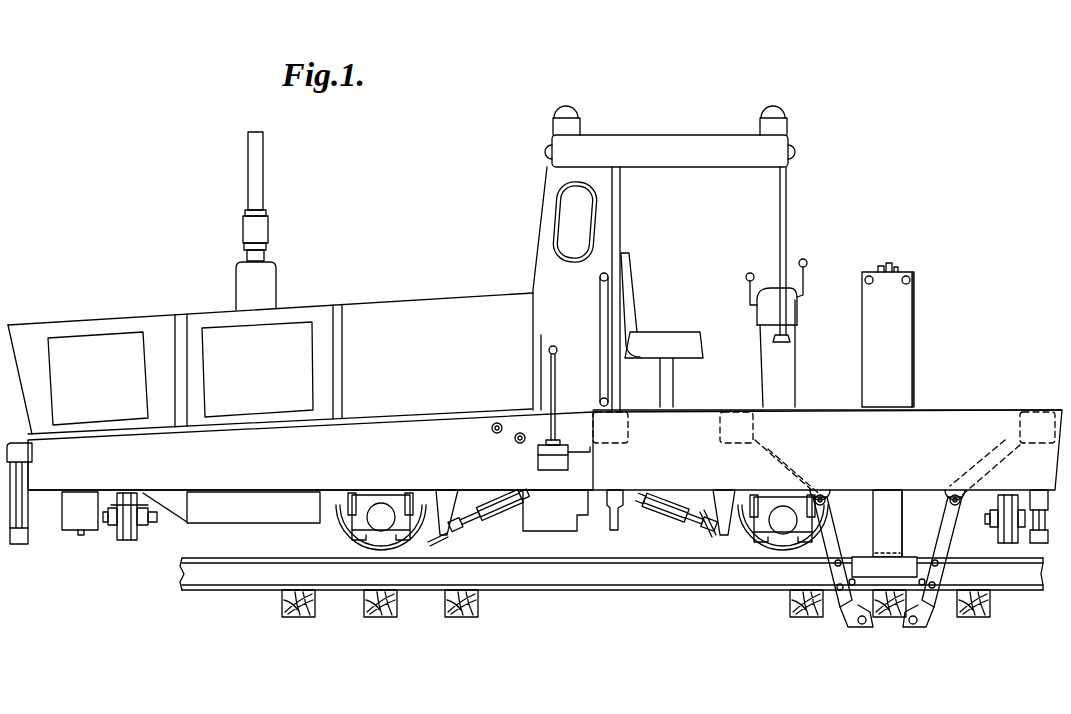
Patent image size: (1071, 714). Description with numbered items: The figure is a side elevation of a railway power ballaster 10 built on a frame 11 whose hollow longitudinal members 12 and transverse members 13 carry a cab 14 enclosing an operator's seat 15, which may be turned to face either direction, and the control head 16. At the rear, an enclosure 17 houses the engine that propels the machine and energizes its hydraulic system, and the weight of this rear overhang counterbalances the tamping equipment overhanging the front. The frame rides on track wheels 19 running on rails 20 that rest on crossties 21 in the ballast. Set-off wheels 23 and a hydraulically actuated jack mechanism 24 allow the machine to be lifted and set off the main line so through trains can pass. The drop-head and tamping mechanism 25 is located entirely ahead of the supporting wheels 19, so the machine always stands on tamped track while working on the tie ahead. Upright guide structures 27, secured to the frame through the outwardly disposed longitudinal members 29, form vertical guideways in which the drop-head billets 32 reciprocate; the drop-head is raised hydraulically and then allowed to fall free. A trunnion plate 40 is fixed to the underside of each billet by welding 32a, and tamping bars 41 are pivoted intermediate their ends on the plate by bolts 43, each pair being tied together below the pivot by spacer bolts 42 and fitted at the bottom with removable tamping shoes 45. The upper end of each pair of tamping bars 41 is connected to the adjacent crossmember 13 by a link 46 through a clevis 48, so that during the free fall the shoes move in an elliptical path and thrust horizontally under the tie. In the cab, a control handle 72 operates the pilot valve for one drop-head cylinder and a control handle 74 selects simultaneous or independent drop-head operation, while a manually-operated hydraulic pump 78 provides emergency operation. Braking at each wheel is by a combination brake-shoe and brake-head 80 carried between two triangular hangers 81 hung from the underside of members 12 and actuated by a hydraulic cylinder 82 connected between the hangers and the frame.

The railway power ballaster 10 is at (441, 296).
The frame 11 is at (302, 473).
The hollow longitudinal members 12 is at (393, 432).
The transverse members 13 is at (628, 408).
The cab 14 is at (652, 136).
The operator's seat 15 is at (662, 343).
The control head 16 is at (762, 318).
The enclosure 17 is at (189, 320).
The track wheels 19 is at (345, 525).
The rails 20 is at (624, 580).
The crossties 21 is at (446, 605).
The set-off wheels 23 is at (127, 541).
The hydraulically actuated jack mechanism 24 is at (28, 518).
The drop-head and tamping mechanism 25 is at (914, 292).
The upright guide structures 27 is at (907, 364).
The outwardly disposed longitudinal members 29 is at (826, 410).
The billets 32 is at (880, 535).
The welding 32a is at (887, 548).
The trunnion plate 40 is at (905, 565).
The tamping bars 41 is at (835, 515).
The spacer bolts 42 is at (845, 600).
The bolts 43 is at (835, 565).
The tamping shoe 45 is at (862, 625).
The link 46 is at (822, 494).
The clevis 48 is at (887, 456).
The control handle 72 is at (749, 273).
The control handle 74 is at (806, 262).
The manually-operated hydraulic pump 78 is at (538, 464).
The combination brake-shoe and brake-head 80 is at (428, 538).
The hangers 81 is at (447, 517).
The hydraulic cylinder 82 is at (495, 509).